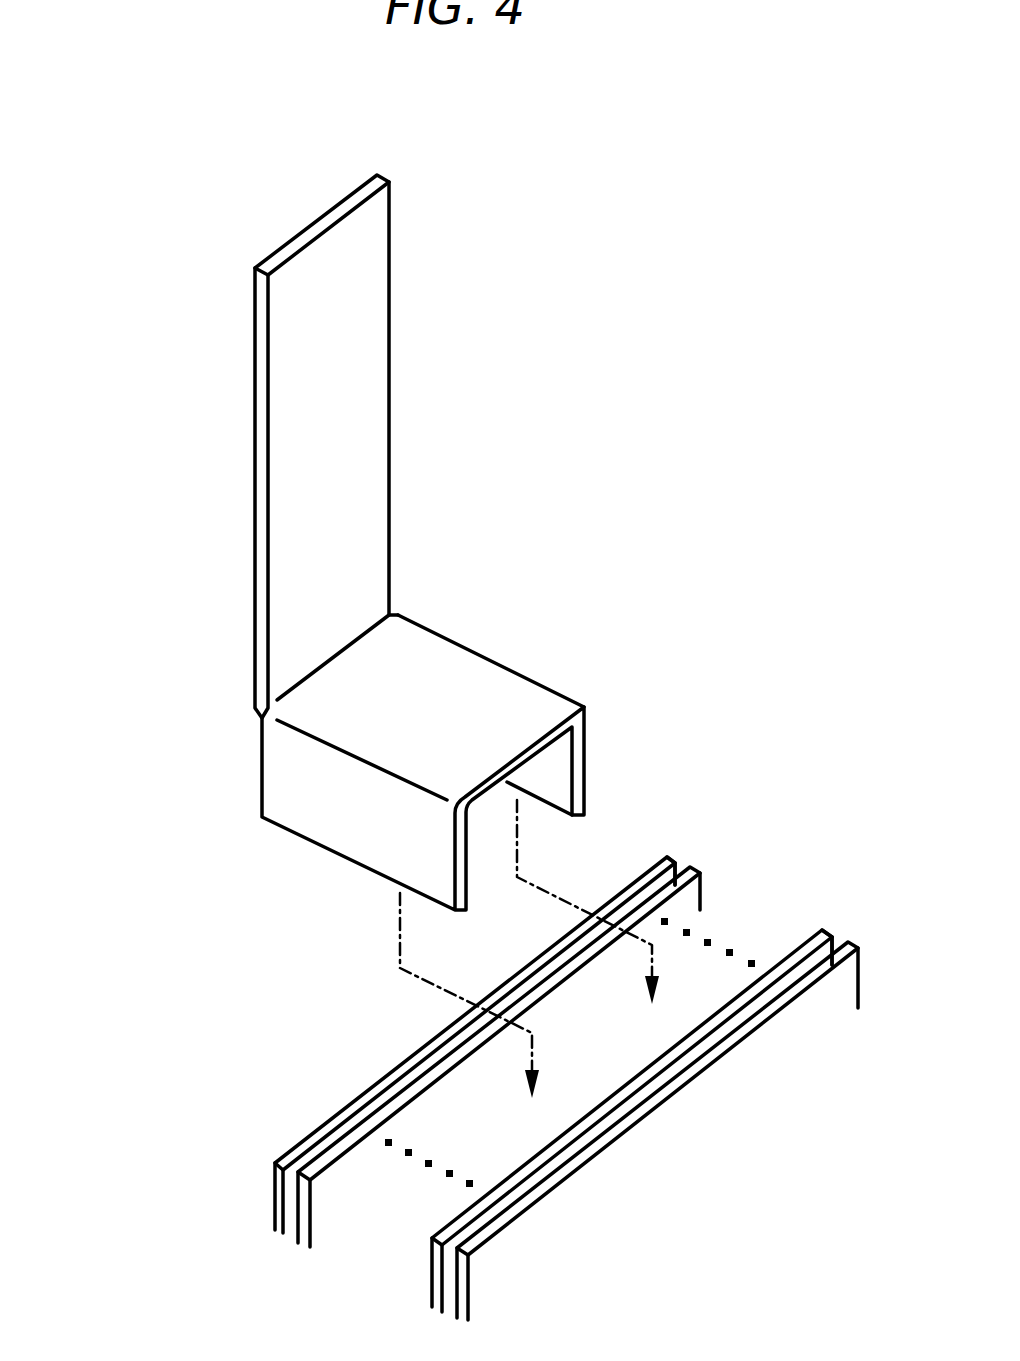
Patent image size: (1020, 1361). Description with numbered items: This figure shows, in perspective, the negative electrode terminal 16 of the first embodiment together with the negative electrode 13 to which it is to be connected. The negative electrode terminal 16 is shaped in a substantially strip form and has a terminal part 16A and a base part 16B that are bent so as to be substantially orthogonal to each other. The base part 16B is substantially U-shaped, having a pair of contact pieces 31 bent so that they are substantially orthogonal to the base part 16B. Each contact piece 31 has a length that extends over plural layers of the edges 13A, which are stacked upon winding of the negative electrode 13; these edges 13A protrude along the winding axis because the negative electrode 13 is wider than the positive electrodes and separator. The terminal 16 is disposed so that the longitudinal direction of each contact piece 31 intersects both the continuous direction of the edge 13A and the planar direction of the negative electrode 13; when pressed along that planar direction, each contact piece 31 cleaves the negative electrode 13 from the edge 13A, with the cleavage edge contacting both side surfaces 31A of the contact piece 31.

The negative electrode 13 is at (655, 1180).
The edge 13A is at (360, 1132).
The negative electrode terminal 16 is at (236, 570).
The terminal part 16A is at (362, 418).
The base part 16B is at (457, 680).
The contact piece 31 is at (563, 787).
The side surface 31A is at (287, 792).